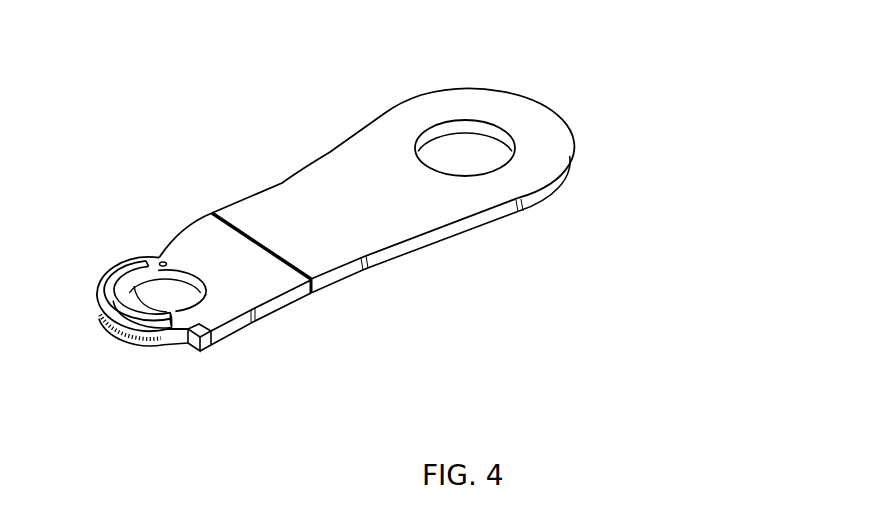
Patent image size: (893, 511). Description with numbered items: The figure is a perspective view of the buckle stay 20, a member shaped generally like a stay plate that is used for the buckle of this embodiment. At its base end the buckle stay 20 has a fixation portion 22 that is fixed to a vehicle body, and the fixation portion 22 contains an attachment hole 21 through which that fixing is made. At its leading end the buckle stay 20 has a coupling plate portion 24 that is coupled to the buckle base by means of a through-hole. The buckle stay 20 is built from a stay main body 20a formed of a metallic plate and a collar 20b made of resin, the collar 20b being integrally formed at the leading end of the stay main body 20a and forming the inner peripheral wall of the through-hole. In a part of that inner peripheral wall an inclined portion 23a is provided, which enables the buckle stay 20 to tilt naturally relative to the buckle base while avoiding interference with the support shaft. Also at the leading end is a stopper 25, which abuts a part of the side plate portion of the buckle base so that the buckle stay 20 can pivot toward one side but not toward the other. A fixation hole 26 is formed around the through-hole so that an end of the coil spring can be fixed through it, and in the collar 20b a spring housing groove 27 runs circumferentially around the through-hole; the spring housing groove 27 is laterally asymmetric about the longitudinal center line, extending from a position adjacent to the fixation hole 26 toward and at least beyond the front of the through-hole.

The buckle stay 20 is at (305, 234).
The stay main body 20a is at (398, 162).
The collar 20b is at (205, 303).
The attachment hole 21 is at (467, 127).
The fixation portion 22 is at (446, 110).
The inclined portion 23a is at (143, 260).
The coupling plate portion 24 is at (227, 292).
The stopper 25 is at (192, 355).
The fixation hole 26 is at (162, 259).
The spring housing groove 27 is at (117, 286).